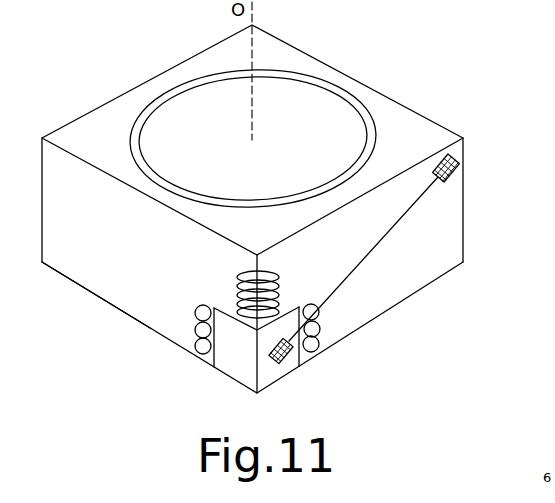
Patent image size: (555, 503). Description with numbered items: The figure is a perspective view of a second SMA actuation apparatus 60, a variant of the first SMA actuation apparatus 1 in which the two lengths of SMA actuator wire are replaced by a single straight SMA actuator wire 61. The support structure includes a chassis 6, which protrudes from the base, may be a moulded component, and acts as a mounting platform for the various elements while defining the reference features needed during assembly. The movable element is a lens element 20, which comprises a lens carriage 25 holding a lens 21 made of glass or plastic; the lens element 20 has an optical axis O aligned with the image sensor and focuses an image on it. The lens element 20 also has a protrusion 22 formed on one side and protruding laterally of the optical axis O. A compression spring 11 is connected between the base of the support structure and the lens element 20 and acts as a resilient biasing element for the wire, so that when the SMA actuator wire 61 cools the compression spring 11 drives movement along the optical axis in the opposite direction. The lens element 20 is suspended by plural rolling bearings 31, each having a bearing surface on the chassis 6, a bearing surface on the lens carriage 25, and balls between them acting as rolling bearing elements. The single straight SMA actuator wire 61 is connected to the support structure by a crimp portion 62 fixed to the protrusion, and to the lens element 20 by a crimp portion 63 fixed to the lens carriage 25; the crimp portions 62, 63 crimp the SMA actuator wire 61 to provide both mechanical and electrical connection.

The SMA actuation apparatus 1 is at (85, 137).
The chassis 6 is at (62, 204).
The compression spring 11 is at (237, 297).
The lens element 20 is at (270, 119).
The lens 21 is at (300, 97).
The protrusion 22 is at (238, 357).
The lens carriage 25 is at (360, 110).
The rolling bearings 31 is at (197, 334).
The second SMA actuation apparatus 60 is at (447, 90).
The SMA actuator wire 61 is at (355, 270).
The crimp portion 62 is at (456, 178).
The crimp portion 63 is at (287, 363).